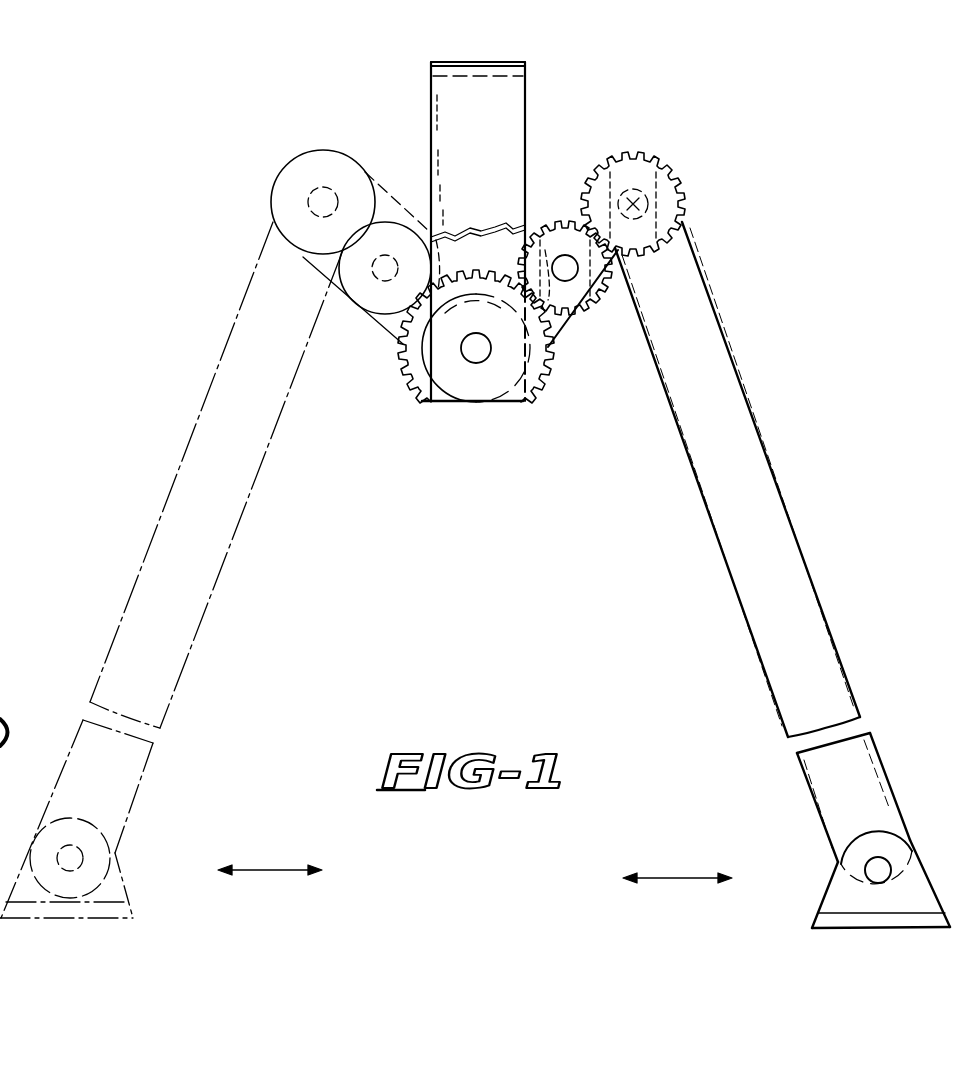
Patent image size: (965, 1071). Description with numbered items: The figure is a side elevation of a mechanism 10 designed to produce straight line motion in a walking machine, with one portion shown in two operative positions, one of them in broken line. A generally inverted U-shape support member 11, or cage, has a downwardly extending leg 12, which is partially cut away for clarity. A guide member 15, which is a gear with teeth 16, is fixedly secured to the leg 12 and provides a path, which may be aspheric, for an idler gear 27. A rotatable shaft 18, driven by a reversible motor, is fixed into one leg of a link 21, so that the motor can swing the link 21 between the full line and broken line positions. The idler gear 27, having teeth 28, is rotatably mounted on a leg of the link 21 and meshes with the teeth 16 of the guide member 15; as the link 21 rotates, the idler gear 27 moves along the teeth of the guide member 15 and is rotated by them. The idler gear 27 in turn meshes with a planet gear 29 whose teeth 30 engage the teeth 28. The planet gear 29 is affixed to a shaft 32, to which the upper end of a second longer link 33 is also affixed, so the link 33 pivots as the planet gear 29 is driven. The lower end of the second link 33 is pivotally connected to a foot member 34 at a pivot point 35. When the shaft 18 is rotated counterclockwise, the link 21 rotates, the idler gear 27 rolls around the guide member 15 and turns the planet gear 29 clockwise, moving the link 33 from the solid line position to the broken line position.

The mechanism 10 is at (748, 250).
The support member 11 is at (531, 112).
The leg 12 is at (445, 112).
The guide member 15 is at (508, 403).
The teeth 16 is at (410, 372).
The rotatable shaft 18 is at (474, 360).
The link 21 is at (563, 340).
The idler gear 27 is at (372, 293).
The teeth 28 is at (553, 223).
The planet gear 29 is at (283, 201).
The teeth 30 is at (500, 263).
The shaft 32 is at (670, 165).
The second link 33 is at (216, 432).
The foot member 34 is at (908, 918).
The pivot point 35 is at (883, 866).